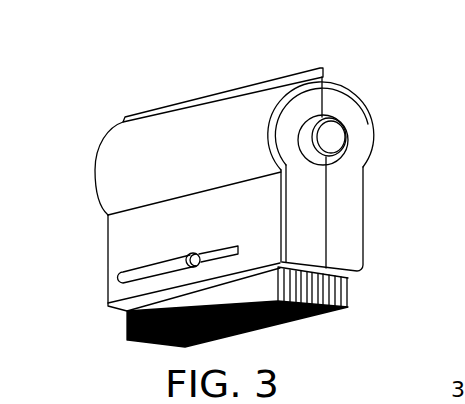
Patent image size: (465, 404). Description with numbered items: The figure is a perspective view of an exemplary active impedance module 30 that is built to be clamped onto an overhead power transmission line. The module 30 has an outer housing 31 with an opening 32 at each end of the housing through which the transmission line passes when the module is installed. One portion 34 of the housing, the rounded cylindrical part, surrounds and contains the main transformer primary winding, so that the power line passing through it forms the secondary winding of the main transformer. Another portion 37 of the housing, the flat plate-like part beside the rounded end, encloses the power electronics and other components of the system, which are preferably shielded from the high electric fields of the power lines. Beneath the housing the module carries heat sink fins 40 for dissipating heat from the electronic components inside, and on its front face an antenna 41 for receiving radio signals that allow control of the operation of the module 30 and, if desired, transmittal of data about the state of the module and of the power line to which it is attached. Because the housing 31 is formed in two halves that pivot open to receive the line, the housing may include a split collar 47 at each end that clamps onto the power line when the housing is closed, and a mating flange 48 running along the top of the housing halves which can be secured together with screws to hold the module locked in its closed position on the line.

The active impedance module 30 is at (140, 112).
The outer housing 31 is at (373, 132).
The openings 32 is at (330, 137).
The portion of the housing 34 is at (117, 160).
The portion of the housing 37 is at (363, 198).
The heat sink fins 40 is at (338, 289).
The antenna 41 is at (150, 265).
The split collars 47 is at (327, 118).
The mating flanges 48 is at (218, 88).